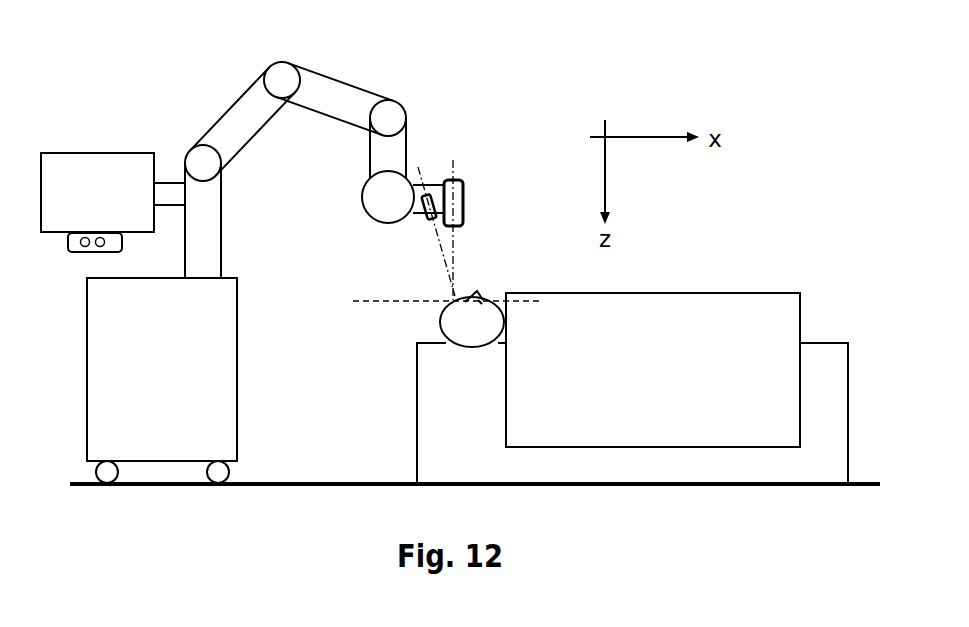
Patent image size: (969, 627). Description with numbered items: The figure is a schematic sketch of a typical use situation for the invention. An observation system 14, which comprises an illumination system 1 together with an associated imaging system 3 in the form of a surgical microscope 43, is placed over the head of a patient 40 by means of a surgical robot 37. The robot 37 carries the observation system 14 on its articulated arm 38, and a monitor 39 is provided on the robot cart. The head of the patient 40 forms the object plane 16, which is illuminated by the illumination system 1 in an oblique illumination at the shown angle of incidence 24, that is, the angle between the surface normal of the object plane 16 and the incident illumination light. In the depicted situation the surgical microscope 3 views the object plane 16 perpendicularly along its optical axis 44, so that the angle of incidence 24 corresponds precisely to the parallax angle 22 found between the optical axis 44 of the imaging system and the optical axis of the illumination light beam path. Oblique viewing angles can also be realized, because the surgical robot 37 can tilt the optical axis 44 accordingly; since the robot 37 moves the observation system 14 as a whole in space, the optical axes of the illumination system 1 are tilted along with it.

The illumination system 1 is at (428, 186).
The imaging system 3 is at (481, 167).
The microscope 43 is at (463, 200).
The observation system 14 is at (469, 135).
The object plane 16 is at (358, 300).
The parallax angle 22 is at (445, 251).
The angle of incidence 24 is at (407, 231).
The surgical robot 37 is at (215, 136).
The arm 38 is at (337, 92).
The monitor 39 is at (87, 180).
The patient 40 is at (447, 323).
The optical axis 44 is at (457, 263).